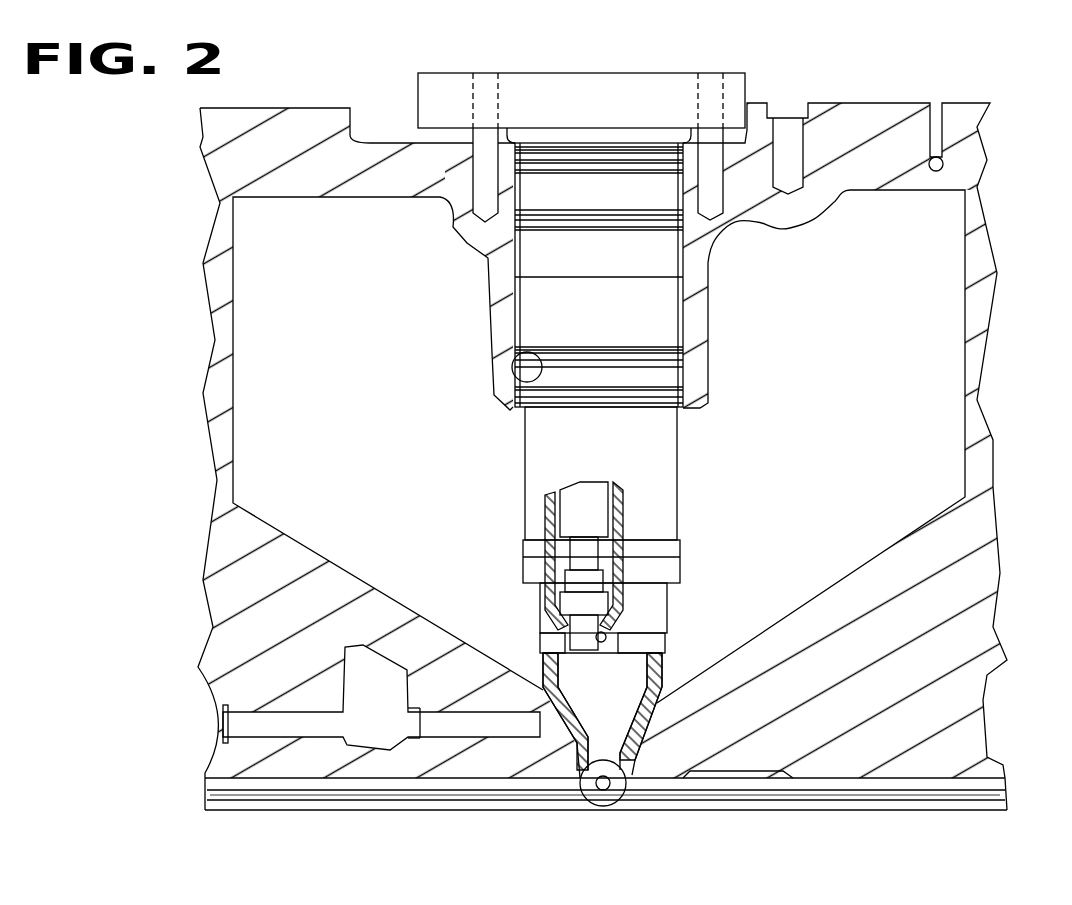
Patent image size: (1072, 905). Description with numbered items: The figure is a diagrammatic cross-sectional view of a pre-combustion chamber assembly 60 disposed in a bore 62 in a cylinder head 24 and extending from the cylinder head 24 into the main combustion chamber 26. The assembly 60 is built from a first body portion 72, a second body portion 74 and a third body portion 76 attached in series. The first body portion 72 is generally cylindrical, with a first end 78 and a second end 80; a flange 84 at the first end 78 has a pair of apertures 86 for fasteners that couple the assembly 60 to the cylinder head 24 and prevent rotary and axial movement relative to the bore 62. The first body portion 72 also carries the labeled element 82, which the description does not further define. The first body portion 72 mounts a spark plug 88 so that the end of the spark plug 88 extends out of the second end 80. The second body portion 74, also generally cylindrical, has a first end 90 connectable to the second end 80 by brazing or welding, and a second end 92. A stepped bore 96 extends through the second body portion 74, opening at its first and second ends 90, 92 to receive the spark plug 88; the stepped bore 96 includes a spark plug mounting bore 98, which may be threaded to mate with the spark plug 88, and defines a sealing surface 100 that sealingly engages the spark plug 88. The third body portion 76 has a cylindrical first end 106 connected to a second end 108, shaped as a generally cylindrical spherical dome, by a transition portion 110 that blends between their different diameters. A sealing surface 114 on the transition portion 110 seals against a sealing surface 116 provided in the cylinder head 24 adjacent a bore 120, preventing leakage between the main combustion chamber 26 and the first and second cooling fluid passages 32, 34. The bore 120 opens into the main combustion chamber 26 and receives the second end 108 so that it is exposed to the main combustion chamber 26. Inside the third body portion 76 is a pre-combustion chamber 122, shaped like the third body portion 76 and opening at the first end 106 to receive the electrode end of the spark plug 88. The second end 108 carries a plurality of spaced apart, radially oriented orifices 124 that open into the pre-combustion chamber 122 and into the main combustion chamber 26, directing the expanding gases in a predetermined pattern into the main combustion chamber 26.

The cylinder head 24 is at (975, 525).
The main combustion chamber 26 is at (505, 793).
The first cooling fluid passage 32 is at (240, 723).
The second cooling fluid passage 34 is at (855, 399).
The pre-combustion chamber assembly 60 is at (416, 395).
The bore 62 is at (512, 357).
The first body portion 72 is at (688, 482).
The second body portion 74 is at (686, 603).
The third body portion 76 is at (667, 729).
The first end 78 is at (403, 70).
The second end 80 is at (683, 540).
The upper body 82 is at (665, 314).
The flange 84 is at (430, 83).
The apertures 86 is at (500, 80).
The spark plug 88 is at (568, 508).
The first end 90 is at (667, 590).
The second end 92 is at (665, 640).
The stepped bore 96 is at (562, 553).
The spark plug mounting bore 98 is at (607, 638).
The sealing surface 100 is at (557, 608).
The first end 106 is at (548, 672).
The second end 108 is at (634, 764).
The transition portion 110 is at (660, 720).
The sealing surface 114 is at (566, 750).
The sealing surface 116 is at (560, 737).
The bore 120 is at (577, 765).
The pre-combustion chamber 122 is at (640, 675).
The orifices 124 is at (625, 784).